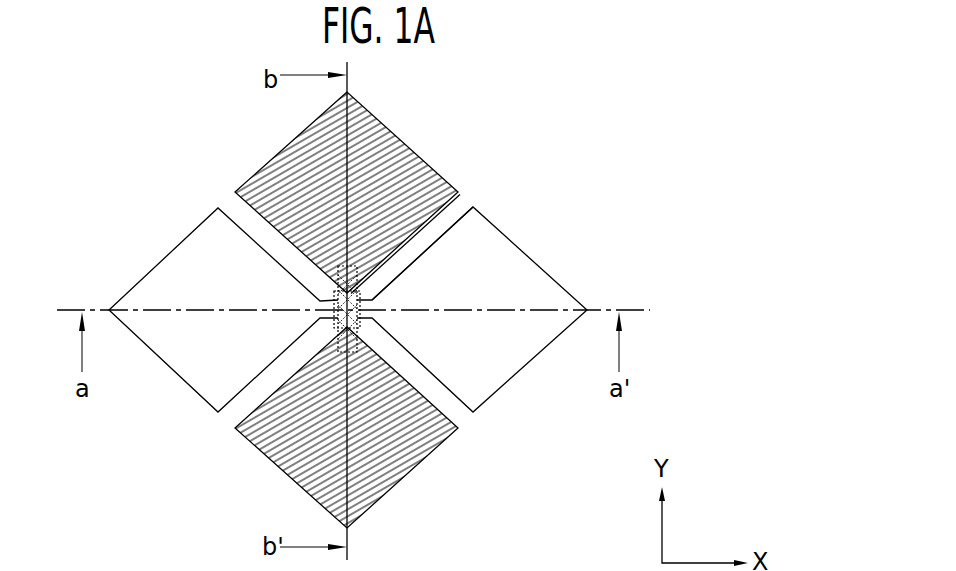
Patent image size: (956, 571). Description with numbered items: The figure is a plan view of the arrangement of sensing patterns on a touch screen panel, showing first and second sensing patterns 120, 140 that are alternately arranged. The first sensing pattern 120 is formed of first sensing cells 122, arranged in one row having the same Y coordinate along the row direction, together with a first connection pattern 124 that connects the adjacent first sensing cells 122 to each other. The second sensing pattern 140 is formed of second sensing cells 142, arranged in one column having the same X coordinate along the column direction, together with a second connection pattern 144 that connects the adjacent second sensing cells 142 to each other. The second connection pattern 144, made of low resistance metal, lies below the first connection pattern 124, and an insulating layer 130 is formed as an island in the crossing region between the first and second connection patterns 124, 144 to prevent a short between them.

The first sensing pattern 120 is at (402, 307).
The first sensing cell 122 is at (173, 274).
The first connection pattern 124 is at (410, 268).
The insulating layer 130 is at (335, 320).
The second sensing pattern 140 is at (425, 312).
The second sensing cell 142 is at (402, 150).
The second connection pattern 144 is at (375, 286).